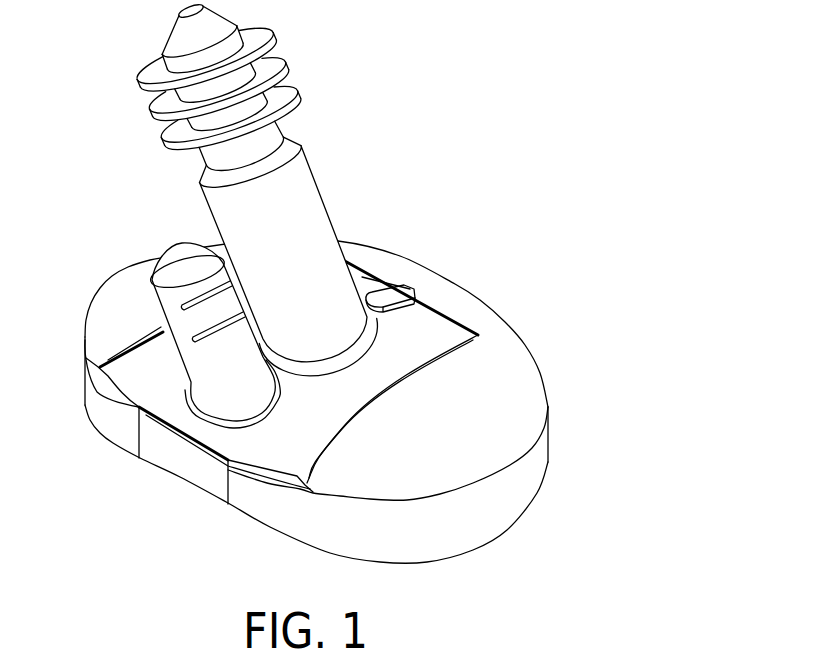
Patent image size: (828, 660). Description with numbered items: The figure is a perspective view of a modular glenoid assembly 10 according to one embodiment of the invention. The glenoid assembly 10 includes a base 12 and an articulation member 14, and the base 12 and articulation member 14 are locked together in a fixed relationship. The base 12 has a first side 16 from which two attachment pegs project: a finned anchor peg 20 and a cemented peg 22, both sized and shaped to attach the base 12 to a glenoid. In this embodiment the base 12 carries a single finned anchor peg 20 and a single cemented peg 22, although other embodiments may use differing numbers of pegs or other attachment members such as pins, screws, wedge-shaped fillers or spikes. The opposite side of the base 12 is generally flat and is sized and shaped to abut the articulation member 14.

The glenoid assembly 10 is at (484, 160).
The base 12 is at (293, 428).
The articulation member 14 is at (524, 412).
The first side 16 is at (443, 330).
The finned anchor peg 20 is at (293, 183).
The cemented peg 22 is at (167, 268).